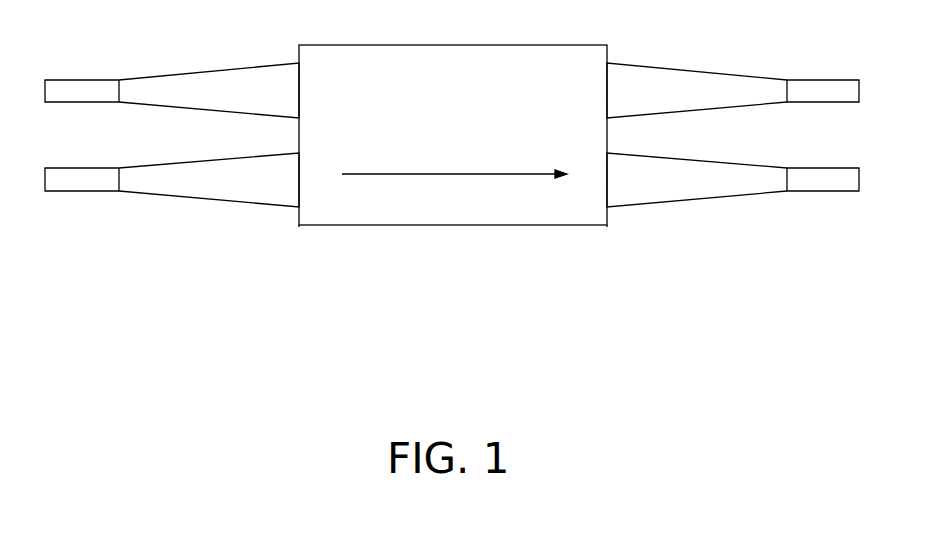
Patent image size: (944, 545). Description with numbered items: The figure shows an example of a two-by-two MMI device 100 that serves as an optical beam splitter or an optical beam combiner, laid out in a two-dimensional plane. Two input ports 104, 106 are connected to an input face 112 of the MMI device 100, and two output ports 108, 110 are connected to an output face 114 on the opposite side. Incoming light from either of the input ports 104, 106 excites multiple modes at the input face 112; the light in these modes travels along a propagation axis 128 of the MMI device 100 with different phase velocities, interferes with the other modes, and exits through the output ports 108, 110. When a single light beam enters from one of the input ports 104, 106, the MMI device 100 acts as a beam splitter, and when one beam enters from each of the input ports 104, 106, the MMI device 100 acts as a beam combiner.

The 2×2 MMI device 100 is at (453, 112).
The input port 104 is at (172, 79).
The input port 106 is at (172, 169).
The output port 108 is at (733, 79).
The output port 110 is at (733, 169).
The input face 112 is at (295, 248).
The output face 114 is at (603, 248).
The propagation axis 128 is at (464, 188).